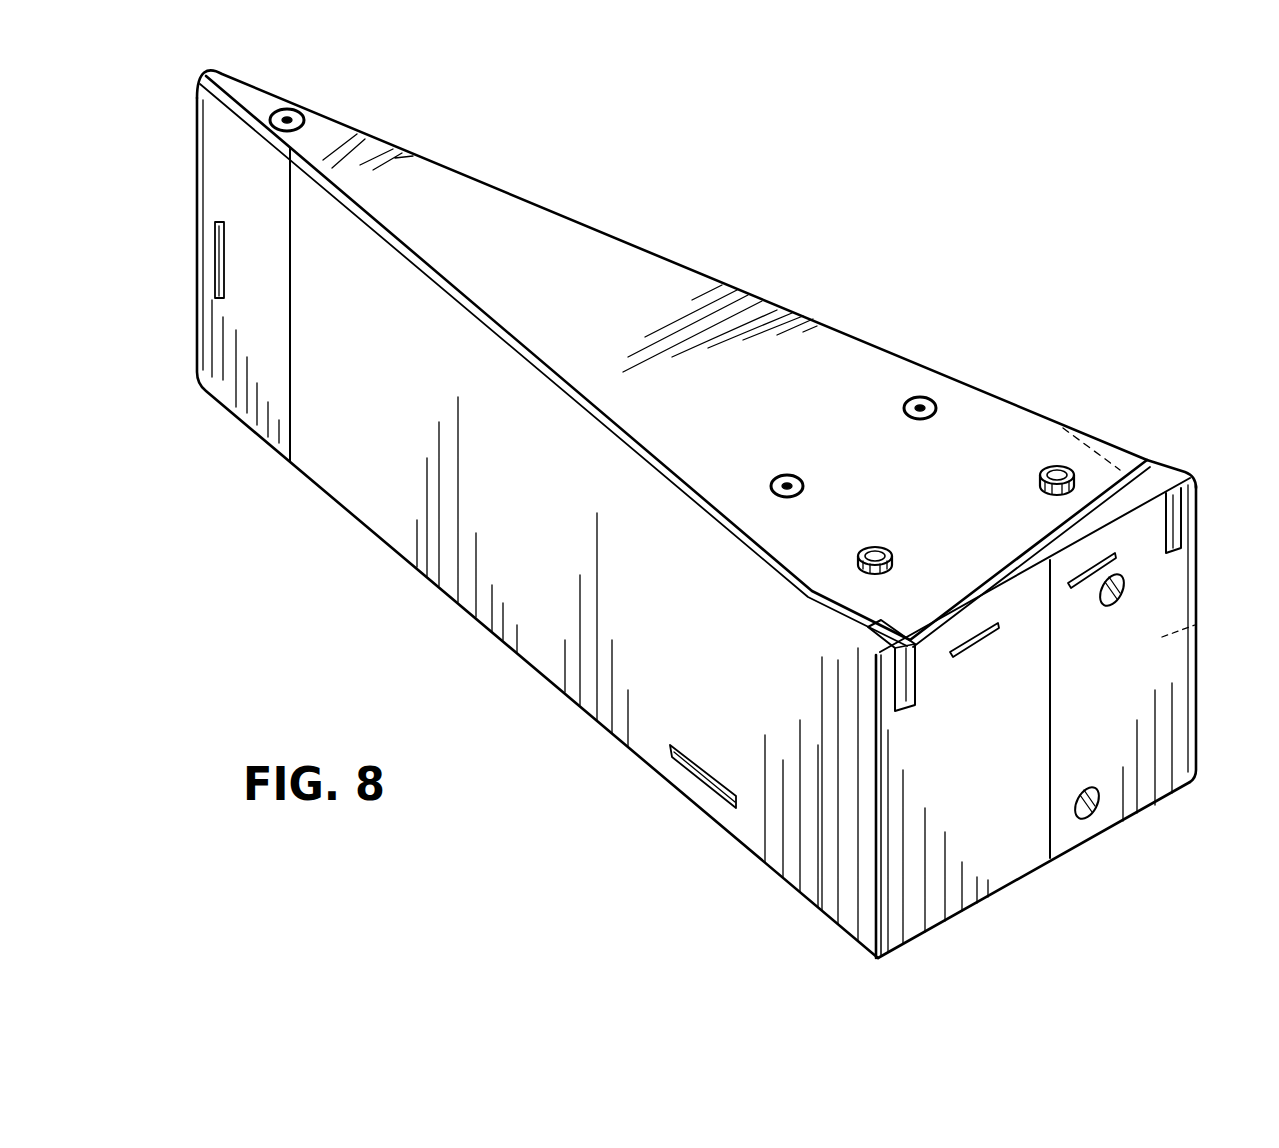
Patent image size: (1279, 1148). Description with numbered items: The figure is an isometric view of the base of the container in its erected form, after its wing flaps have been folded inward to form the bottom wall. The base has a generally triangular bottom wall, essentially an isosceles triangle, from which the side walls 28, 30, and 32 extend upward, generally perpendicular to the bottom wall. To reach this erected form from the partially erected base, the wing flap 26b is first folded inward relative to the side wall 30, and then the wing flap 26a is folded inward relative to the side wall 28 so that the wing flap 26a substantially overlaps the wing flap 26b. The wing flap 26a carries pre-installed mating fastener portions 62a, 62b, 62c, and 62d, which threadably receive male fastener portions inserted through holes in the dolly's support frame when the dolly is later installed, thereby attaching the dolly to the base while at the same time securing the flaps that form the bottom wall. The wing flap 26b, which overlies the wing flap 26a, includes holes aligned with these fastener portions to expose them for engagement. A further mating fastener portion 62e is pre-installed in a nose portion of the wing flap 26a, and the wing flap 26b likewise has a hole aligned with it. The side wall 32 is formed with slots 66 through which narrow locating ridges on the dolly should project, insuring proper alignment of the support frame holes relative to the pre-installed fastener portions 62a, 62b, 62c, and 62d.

The wing flap 26a is at (845, 343).
The wing flap 26b is at (1120, 496).
The side wall 28 is at (1197, 622).
The side wall 30 is at (458, 582).
The side wall 32 is at (1163, 773).
The mating fastener portion 62a is at (936, 400).
The mating fastener portion 62b is at (1045, 468).
The mating fastener portion 62c is at (797, 474).
The mating fastener portion 62d is at (890, 548).
The mating fastener portion 62e is at (307, 113).
The slots 66 is at (1068, 580).